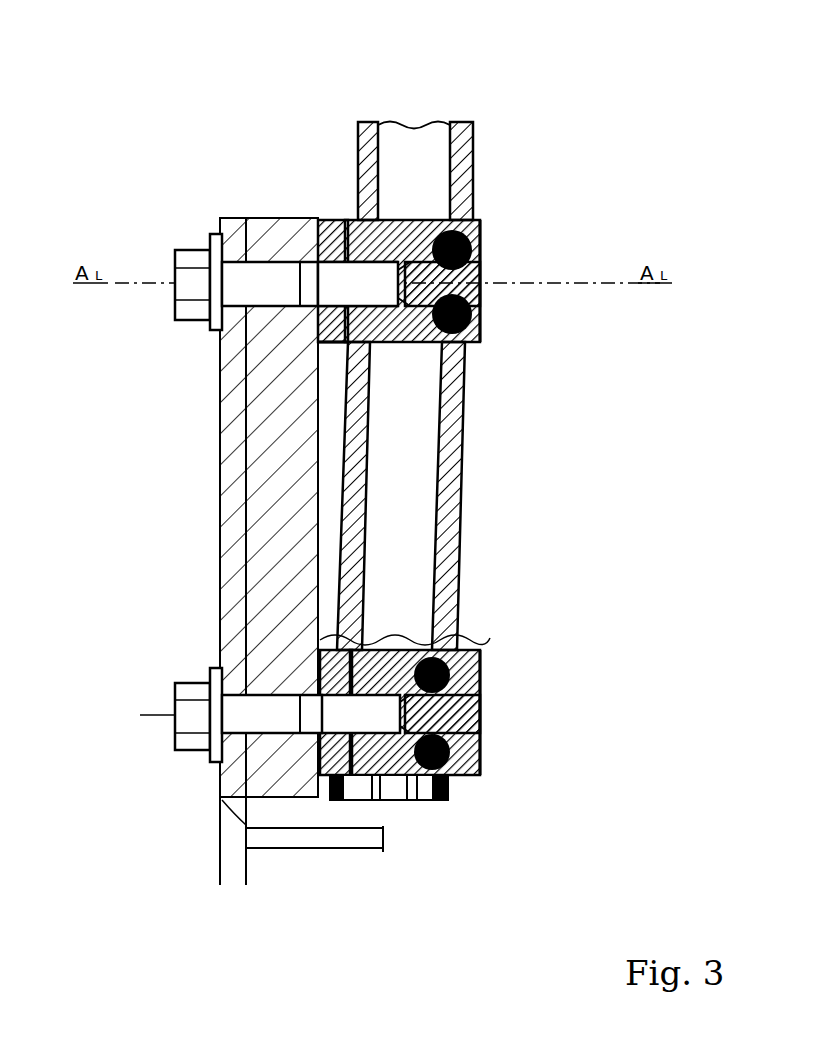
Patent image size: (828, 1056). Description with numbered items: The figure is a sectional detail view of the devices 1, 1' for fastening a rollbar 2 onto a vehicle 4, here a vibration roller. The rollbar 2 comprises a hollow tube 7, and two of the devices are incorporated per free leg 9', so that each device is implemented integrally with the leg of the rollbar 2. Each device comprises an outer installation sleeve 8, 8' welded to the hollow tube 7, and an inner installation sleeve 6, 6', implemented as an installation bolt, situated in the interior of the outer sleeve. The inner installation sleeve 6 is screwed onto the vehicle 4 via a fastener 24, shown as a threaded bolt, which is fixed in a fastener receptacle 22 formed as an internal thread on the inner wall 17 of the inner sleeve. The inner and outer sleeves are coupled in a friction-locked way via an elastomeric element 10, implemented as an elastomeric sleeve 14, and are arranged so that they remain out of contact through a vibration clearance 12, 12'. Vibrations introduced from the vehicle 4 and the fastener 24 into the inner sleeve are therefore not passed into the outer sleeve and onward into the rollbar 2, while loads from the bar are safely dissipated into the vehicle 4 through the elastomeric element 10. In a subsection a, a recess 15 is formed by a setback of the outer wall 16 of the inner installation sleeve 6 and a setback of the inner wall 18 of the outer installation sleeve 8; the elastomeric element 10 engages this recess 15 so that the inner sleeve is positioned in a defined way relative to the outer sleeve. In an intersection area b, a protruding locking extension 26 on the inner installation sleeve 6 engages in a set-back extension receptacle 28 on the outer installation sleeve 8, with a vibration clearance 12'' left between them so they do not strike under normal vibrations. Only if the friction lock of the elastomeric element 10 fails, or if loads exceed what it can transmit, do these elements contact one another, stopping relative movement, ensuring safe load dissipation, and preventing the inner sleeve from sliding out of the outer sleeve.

The device 1 is at (380, 246).
The device 1' is at (461, 738).
The rollbar 2 is at (456, 120).
The vehicle 4 is at (206, 451).
The inner installation sleeve 6 is at (309, 216).
The inner installation sleeve 6' is at (476, 720).
The hollow tube 7 is at (463, 427).
The outer installation sleeve 8 is at (439, 257).
The outer installation sleeve 8' is at (444, 684).
The leg 9' is at (502, 162).
The elastomeric element 10 is at (480, 312).
The vibration clearance 12 is at (336, 232).
The vibration clearance 12' is at (248, 354).
The vibration clearance 12'' is at (376, 665).
The elastomeric sleeve 14 is at (452, 282).
The recess 15 is at (495, 305).
The outer wall 16 is at (480, 717).
The inner wall 17 is at (283, 262).
The inner wall 18 is at (418, 780).
The fastener receptacle 22 is at (397, 215).
The fastener 24 is at (195, 250).
The locking extension 26 is at (407, 780).
The extension receptacle 28 is at (372, 777).